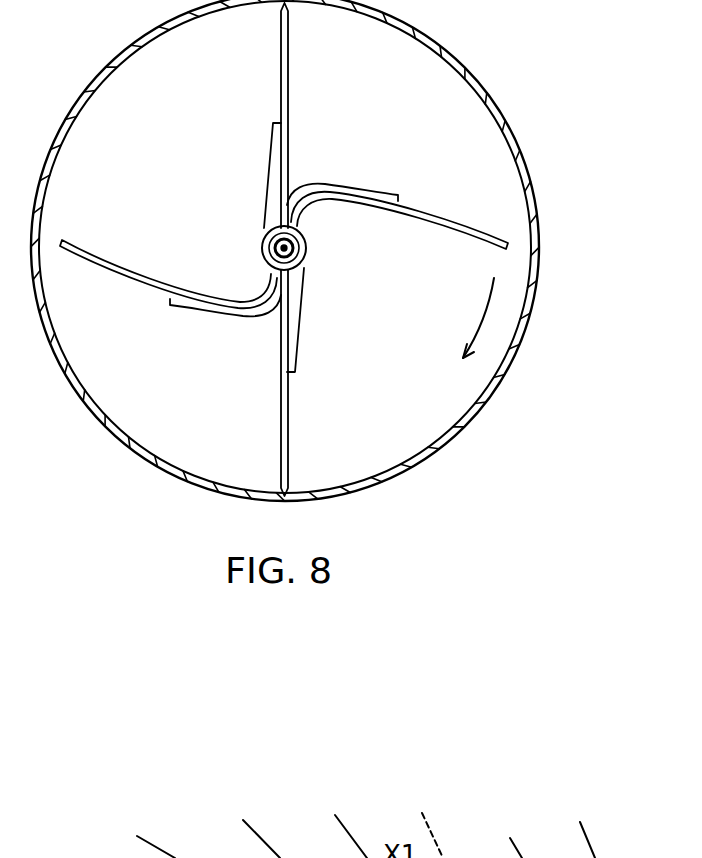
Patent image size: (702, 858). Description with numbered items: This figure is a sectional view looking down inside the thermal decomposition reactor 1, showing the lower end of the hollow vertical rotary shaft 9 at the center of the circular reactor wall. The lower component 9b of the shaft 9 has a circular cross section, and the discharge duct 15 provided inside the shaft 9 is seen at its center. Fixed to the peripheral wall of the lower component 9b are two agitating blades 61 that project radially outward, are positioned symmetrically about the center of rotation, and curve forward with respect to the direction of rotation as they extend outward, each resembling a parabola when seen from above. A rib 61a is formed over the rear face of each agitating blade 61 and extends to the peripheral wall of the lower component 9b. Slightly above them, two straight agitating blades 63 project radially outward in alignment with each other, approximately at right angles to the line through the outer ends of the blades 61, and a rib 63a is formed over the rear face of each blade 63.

The thermal decomposition reactor 1 is at (523, 160).
The hollow vertical rotary shaft 9 is at (308, 246).
The lower component 9b is at (262, 258).
The discharge duct 15 is at (268, 234).
The agitating blade 61 is at (436, 222).
The rib 61a is at (357, 183).
The agitating blade 63 is at (289, 57).
The rib 63a is at (273, 160).